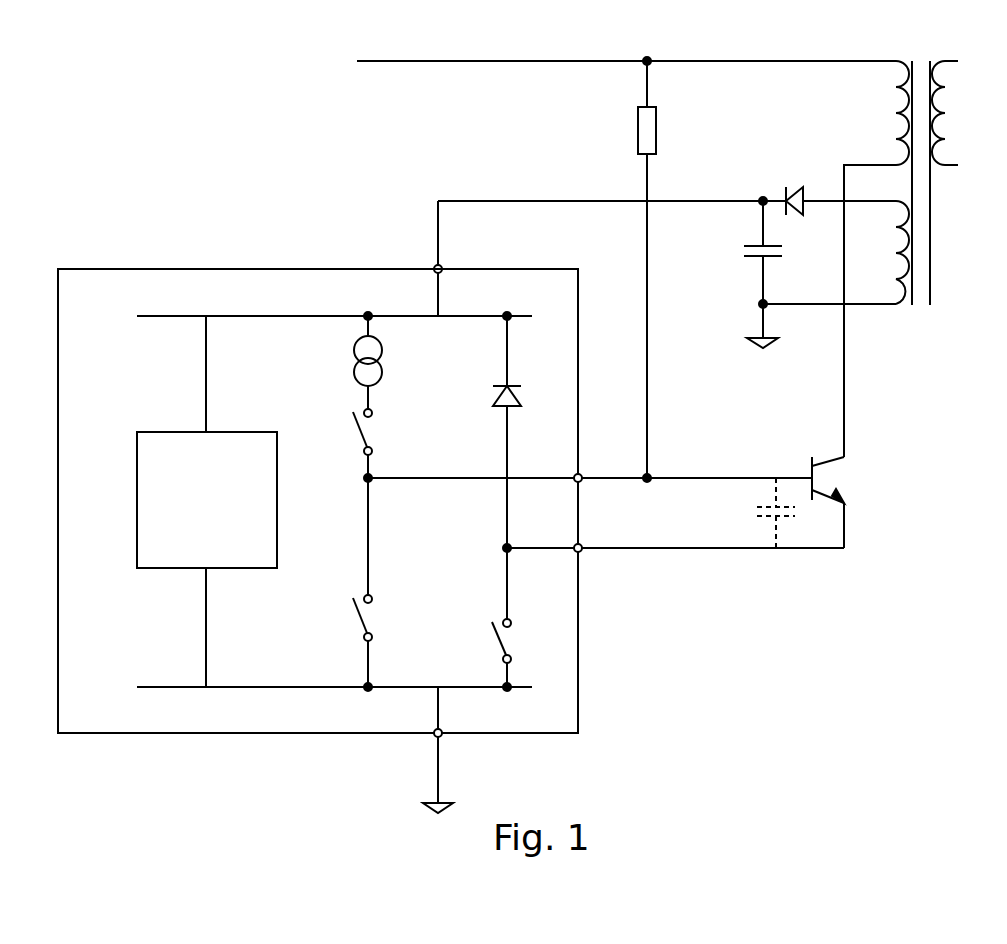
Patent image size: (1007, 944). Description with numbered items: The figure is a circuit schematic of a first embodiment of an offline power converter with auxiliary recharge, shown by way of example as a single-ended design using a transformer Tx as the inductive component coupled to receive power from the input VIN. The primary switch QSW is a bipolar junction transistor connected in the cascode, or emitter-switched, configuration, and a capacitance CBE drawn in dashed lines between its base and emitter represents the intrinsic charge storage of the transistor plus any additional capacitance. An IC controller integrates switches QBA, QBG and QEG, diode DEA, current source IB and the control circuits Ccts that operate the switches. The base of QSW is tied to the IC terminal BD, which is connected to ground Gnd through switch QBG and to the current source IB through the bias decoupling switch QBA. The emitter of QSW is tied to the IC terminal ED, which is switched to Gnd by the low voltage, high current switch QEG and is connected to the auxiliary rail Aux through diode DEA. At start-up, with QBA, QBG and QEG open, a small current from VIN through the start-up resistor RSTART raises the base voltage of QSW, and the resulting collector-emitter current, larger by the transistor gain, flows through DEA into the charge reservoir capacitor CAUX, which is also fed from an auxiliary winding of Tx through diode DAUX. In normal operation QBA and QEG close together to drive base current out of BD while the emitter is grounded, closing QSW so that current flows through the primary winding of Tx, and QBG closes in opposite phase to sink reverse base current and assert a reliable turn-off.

The input voltage VIN is at (604, 63).
The start-up resistor RSTART is at (602, 269).
The auxiliary rail Aux is at (571, 258).
The auxiliary diode DAUX is at (826, 183).
The auxiliary capacitor CAUX is at (787, 274).
The transformer Tx is at (901, 259).
The IC controller IC is at (318, 501).
The control circuits Ccts is at (207, 501).
The current source IB is at (354, 360).
The bias decoupling switch QBA is at (348, 432).
The base drive terminal BD is at (590, 462).
The diode DEA is at (483, 432).
The emitter drive terminal ED is at (675, 565).
The base-to-ground switch QBG is at (348, 617).
The emitter switch QEG is at (487, 641).
The ground Gnd is at (414, 750).
The primary switch QSW is at (852, 502).
The base-emitter capacitance CBE is at (749, 513).